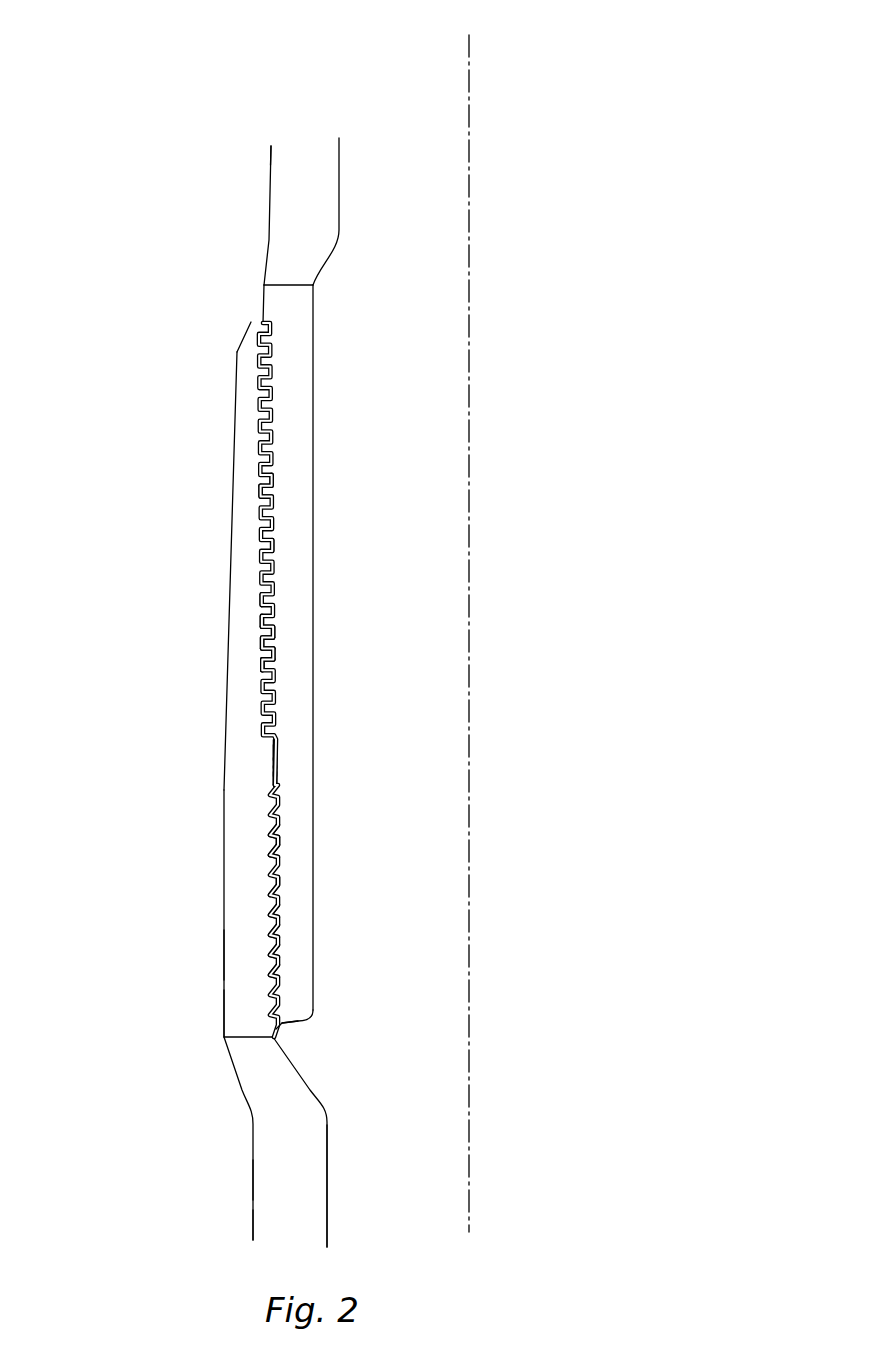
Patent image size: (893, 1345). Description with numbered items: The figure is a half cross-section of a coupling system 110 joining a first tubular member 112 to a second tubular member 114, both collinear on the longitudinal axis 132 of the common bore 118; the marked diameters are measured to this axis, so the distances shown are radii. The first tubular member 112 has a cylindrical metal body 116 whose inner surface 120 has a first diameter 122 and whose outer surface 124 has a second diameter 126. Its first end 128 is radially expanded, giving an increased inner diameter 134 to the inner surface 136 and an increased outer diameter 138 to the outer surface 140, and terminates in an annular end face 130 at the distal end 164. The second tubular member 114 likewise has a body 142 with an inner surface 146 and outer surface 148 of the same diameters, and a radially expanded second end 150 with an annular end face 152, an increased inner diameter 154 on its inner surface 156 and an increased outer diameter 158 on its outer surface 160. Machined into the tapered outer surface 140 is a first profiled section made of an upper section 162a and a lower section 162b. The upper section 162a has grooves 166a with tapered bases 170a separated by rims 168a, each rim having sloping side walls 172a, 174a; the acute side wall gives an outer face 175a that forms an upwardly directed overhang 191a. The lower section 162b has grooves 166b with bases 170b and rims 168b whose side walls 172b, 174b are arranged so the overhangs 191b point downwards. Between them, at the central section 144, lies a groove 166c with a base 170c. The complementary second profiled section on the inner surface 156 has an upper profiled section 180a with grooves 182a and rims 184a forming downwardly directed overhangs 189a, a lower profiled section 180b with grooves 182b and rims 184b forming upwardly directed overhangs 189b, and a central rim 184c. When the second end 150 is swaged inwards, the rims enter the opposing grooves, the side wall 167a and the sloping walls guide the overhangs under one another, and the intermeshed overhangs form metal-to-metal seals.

The coupling system 110 is at (143, 218).
The first tubular member 112 is at (269, 250).
The second tubular member 114 is at (257, 1182).
The body 116 is at (281, 258).
The bore 118 is at (414, 288).
The inner surface 120 is at (339, 222).
The first diameter 122 is at (469, 191).
The outer surface 124 is at (271, 162).
The second diameter 126 is at (277, 65).
The first end 128 is at (300, 446).
The annular end face 130 is at (300, 1023).
The longitudinal axis 132 is at (469, 306).
The increased inner diameter 134 is at (469, 130).
The inner surface 136 is at (313, 376).
The increased outer diameter 138 is at (272, 94).
The outer surface 140 is at (264, 307).
The body 142 is at (278, 1142).
The central section 144 is at (280, 747).
The inner surface 146 is at (327, 1147).
The outer surface 148 is at (257, 1225).
The second end 150 is at (224, 1000).
The annular end face 152 is at (251, 322).
The increased inner diameter 154 is at (469, 159).
The inner surface 156 is at (272, 777).
The increased outer diameter 158 is at (252, 38).
The outer surface 160 is at (224, 953).
The upper section 162a is at (273, 587).
The lower section 162b is at (280, 885).
The distal end 164 is at (308, 1010).
The grooves 166a is at (271, 487).
The grooves 166b is at (279, 837).
The groove 166c is at (280, 762).
The side wall 167a is at (262, 595).
The rims 168a is at (271, 496).
The rims 168b is at (279, 848).
The tapered base 170a is at (273, 542).
The base 170b is at (280, 912).
The base 170c is at (280, 770).
The side wall 172a is at (275, 645).
The sloping walls 172b is at (280, 937).
The side wall 174a is at (275, 652).
The side wall 174b is at (280, 953).
The outer face 175a is at (275, 643).
The upper profiled section 180a is at (232, 548).
The lower profiled section 180b is at (224, 878).
The grooves 182a is at (262, 628).
The grooves 182b is at (268, 848).
The rims 184a is at (262, 637).
The rims 184b is at (268, 837).
The rim 184c is at (272, 753).
The overhang 189a is at (262, 659).
The overhangs 189b is at (267, 885).
The overhang 191a is at (275, 646).
The overhangs 191b is at (280, 977).